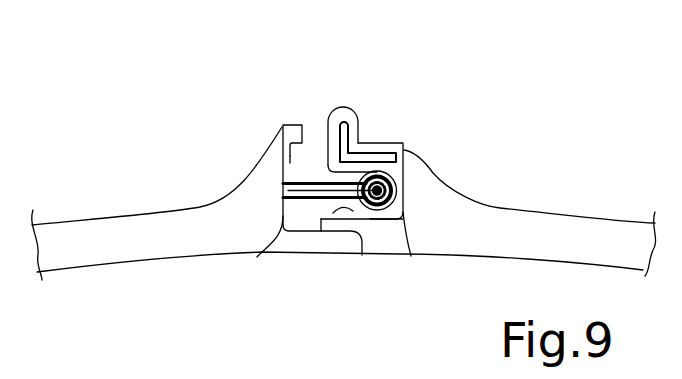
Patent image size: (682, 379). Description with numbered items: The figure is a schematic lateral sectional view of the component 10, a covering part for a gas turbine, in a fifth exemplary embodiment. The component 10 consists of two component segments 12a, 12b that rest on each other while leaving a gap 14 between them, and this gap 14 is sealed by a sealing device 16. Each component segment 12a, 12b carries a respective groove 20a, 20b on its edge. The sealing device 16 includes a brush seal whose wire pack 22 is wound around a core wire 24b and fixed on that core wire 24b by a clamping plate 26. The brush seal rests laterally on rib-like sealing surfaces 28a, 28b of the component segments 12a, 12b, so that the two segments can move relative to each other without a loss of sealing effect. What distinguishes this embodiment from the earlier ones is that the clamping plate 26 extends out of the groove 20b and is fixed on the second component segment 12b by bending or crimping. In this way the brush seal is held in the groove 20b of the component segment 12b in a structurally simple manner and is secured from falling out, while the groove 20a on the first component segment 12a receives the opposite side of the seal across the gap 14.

The component 10 is at (124, 123).
The first component segment 12a is at (93, 228).
The second component segment 12b is at (580, 228).
The gap 14 is at (340, 238).
The sealing device 16 is at (454, 133).
The groove 20a is at (278, 118).
The groove 20b is at (406, 142).
The wire pack 22 is at (304, 186).
The core wire 24b is at (370, 141).
The clamping plate 26 is at (330, 108).
The sealing surface 28a is at (284, 163).
The sealing surface 28b is at (385, 227).